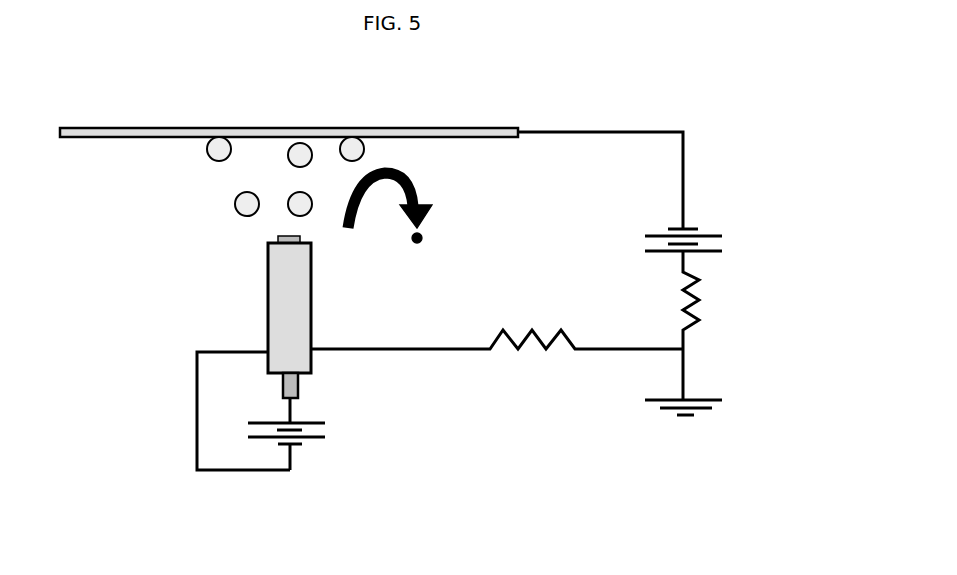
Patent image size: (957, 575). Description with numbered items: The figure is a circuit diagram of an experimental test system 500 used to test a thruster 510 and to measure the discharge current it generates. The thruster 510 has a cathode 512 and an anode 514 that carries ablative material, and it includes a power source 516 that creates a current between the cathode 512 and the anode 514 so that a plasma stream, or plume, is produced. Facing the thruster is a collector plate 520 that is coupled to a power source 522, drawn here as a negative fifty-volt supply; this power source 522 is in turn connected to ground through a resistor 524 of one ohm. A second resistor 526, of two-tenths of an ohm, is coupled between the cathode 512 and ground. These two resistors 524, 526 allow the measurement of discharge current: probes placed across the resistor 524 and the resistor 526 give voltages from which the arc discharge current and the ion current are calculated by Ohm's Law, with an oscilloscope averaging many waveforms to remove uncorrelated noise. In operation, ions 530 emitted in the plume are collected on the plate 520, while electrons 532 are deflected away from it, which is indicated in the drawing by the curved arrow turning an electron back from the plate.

The experimental test system 500 is at (248, 92).
The thruster 510 is at (225, 382).
The cathode 512 is at (267, 278).
The anode 514 is at (300, 380).
The power source 516 is at (265, 432).
The collector plate 520 is at (420, 128).
The power source 522 is at (723, 236).
The resistor 524 is at (700, 302).
The second resistor 526 is at (525, 355).
The ions 530 is at (300, 150).
The electrons 532 is at (420, 205).